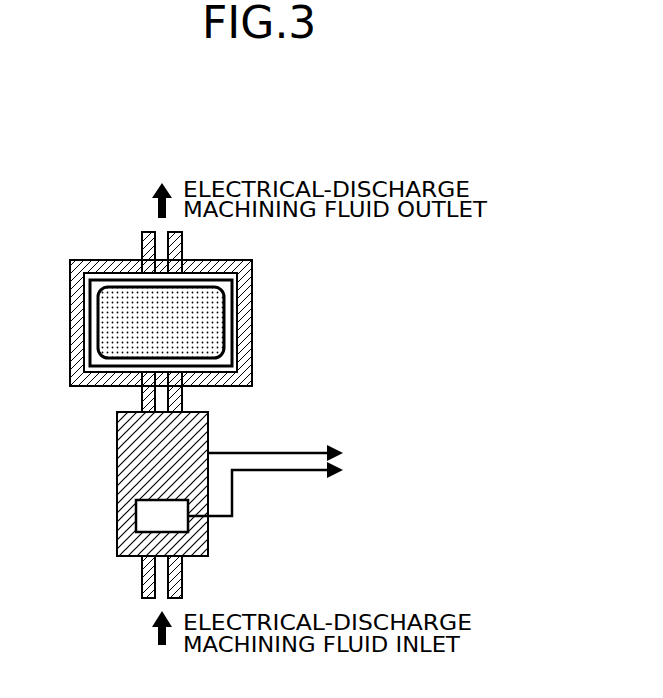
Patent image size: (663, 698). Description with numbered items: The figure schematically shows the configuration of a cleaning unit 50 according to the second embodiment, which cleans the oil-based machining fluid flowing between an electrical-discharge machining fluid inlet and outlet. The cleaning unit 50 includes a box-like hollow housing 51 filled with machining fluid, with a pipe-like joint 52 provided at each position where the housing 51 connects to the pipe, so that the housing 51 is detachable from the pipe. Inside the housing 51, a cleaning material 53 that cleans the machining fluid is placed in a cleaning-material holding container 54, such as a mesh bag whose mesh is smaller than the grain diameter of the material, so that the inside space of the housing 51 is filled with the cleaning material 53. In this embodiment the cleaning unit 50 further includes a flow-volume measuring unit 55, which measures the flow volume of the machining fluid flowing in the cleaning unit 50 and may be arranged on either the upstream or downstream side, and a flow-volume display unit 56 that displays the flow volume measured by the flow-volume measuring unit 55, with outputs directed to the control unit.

The cleaning unit 50 is at (348, 145).
The housing 51 is at (100, 260).
The joint 52 is at (182, 238).
The cleaning material 53 is at (208, 313).
The cleaning-material holding container 54 is at (225, 355).
The flow-volume measuring unit 55 is at (117, 470).
The flow-volume display unit 56 is at (136, 512).